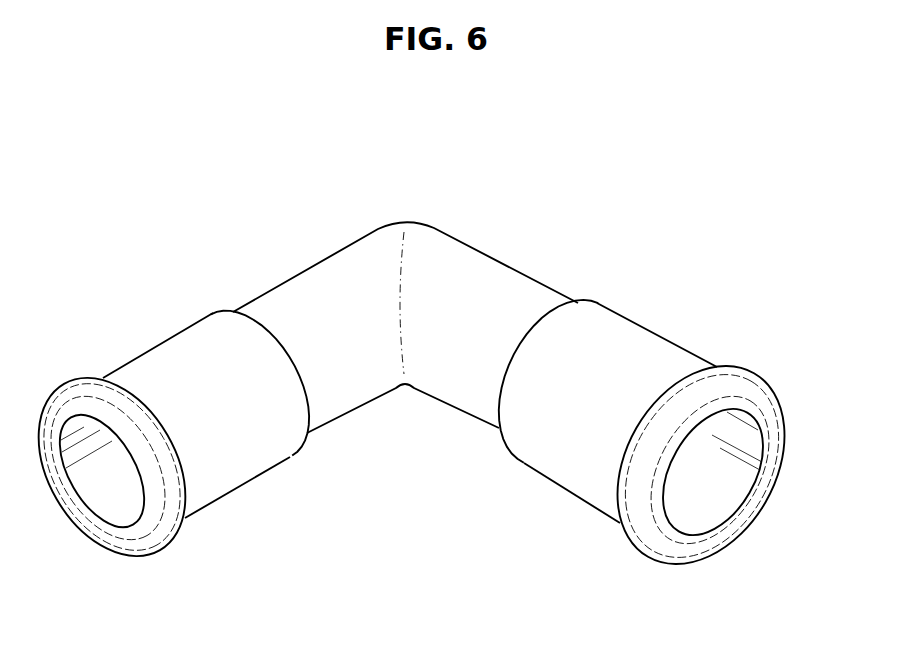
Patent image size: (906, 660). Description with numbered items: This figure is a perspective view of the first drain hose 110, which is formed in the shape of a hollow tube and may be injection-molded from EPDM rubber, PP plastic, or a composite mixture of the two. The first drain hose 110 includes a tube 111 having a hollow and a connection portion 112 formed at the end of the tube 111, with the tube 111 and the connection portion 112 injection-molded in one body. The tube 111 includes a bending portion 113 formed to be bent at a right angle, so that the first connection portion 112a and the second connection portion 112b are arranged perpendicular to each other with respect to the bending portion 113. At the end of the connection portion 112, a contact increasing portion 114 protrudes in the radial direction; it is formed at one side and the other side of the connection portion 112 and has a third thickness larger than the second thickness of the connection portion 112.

The first drain hose 110 is at (591, 143).
The tube 111 is at (352, 267).
The connection portion 112 is at (287, 575).
The first connection portion 112a is at (232, 468).
The second connection portion 112b is at (560, 470).
The bending portion 113 is at (406, 222).
The contact increasing portion 114 is at (118, 387).